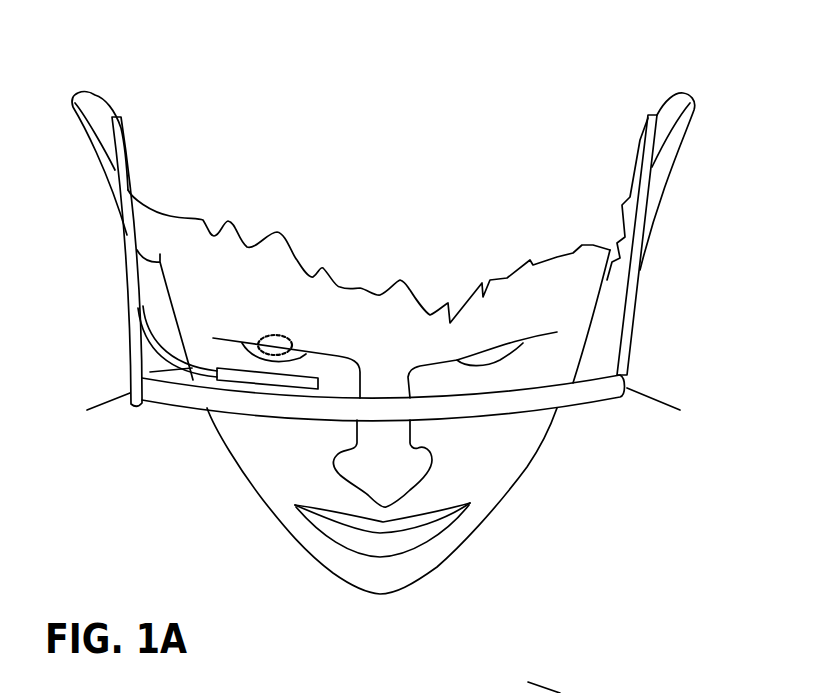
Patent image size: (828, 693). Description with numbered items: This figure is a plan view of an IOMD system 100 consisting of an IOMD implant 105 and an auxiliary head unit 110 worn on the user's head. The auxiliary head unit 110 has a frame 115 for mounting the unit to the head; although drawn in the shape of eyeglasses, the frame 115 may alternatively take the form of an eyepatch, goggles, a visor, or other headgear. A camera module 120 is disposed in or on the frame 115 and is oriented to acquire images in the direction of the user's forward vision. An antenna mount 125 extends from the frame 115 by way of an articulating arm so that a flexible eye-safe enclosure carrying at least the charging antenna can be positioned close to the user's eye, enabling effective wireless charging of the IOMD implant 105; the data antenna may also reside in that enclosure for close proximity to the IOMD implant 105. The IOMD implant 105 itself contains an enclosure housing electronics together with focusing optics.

The IOMD system 100 is at (601, 74).
The IOMD implant 105 is at (293, 345).
The auxiliary head unit 110 is at (149, 456).
The frame 115 is at (587, 396).
The camera module 120 is at (132, 378).
The antenna mount 125 is at (209, 349).